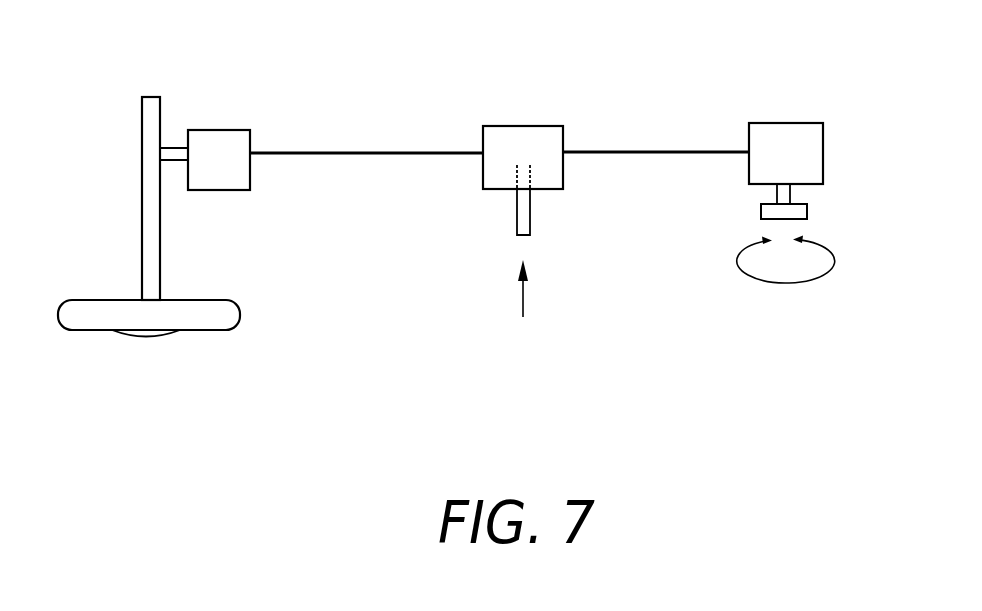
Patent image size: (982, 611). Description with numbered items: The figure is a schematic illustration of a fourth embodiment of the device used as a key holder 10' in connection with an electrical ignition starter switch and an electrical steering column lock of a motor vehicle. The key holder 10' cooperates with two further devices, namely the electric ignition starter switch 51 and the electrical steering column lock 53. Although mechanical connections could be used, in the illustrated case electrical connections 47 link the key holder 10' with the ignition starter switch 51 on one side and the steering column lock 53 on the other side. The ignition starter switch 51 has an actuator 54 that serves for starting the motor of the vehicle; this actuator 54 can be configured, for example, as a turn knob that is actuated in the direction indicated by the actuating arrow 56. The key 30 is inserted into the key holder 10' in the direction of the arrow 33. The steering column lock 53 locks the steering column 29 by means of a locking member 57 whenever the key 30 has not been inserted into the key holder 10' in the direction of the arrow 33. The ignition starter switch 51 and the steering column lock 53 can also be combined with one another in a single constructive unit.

The steering column 29 is at (150, 210).
The locking member 57 is at (173, 153).
The electrical steering column lock 53 is at (203, 148).
The electrical connection 47 is at (373, 150).
The key holder 10' is at (523, 120).
The key 30 is at (528, 223).
The arrow 33 is at (523, 305).
The electric ignition starter switch 51 is at (778, 138).
The actuator 54 is at (800, 213).
The actuating arrow 56 is at (775, 285).